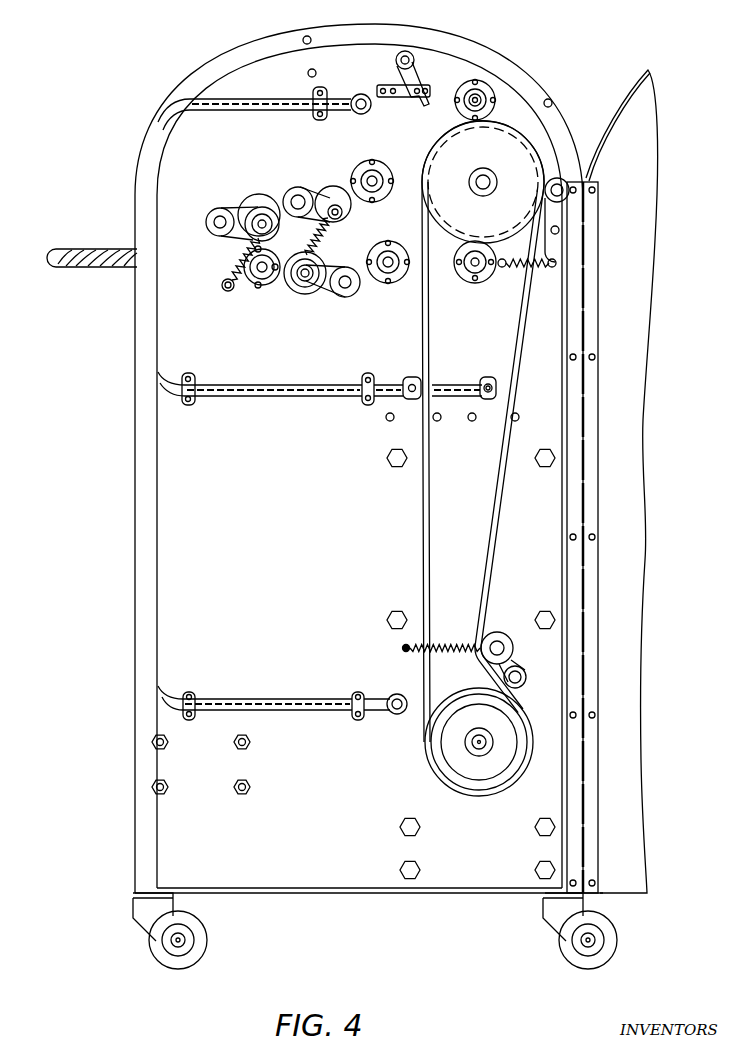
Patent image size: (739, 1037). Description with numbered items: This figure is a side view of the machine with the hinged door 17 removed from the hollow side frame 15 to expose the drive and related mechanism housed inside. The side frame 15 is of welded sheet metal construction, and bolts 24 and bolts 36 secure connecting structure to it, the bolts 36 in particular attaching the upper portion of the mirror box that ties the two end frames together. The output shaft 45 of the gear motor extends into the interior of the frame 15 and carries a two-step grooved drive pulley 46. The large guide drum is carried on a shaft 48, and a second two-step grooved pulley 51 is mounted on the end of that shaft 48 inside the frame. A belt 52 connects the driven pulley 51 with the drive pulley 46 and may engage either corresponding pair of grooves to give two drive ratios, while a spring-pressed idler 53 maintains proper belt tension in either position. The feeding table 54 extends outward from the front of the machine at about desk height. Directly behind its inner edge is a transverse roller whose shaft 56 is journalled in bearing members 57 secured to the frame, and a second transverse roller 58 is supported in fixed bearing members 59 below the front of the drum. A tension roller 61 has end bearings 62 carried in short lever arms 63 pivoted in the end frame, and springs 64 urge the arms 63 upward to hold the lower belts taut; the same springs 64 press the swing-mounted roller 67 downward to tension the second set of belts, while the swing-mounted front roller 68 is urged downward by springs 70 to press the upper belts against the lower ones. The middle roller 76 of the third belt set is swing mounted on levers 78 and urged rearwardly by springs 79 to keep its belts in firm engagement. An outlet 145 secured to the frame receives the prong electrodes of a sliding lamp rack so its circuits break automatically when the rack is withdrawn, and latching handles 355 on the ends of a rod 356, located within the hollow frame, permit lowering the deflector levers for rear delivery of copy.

The hollow side frame 15 is at (310, 883).
The hinged door 17 is at (640, 668).
The bolt 24 is at (164, 788).
The bolt 36 is at (548, 448).
The output shaft 45 is at (480, 748).
The two-step grooved pulley 46 is at (440, 761).
The shaft 48 is at (483, 182).
The second two-step grooved pulley 51 is at (450, 175).
The belt 52 is at (455, 270).
The spring-pressed idler 53 is at (520, 605).
The feeding table 54 is at (86, 267).
The shaft 56 is at (262, 280).
The bearing member 57 is at (256, 288).
The second transverse roller 58 is at (388, 262).
The fixed bearing member 59 is at (383, 272).
The tension roller 61 is at (305, 289).
The end bearing 62 is at (310, 292).
The lever member 63 is at (322, 271).
The spring 64 is at (330, 240).
The roller 67 is at (332, 178).
The front roller 68 is at (262, 207).
The spring 70 is at (240, 258).
The middle roller 76 is at (560, 182).
The lever 78 is at (553, 218).
The spring 79 is at (518, 266).
The outlet 145 is at (410, 384).
The latching handle 355 is at (412, 65).
The rod 356 is at (407, 54).